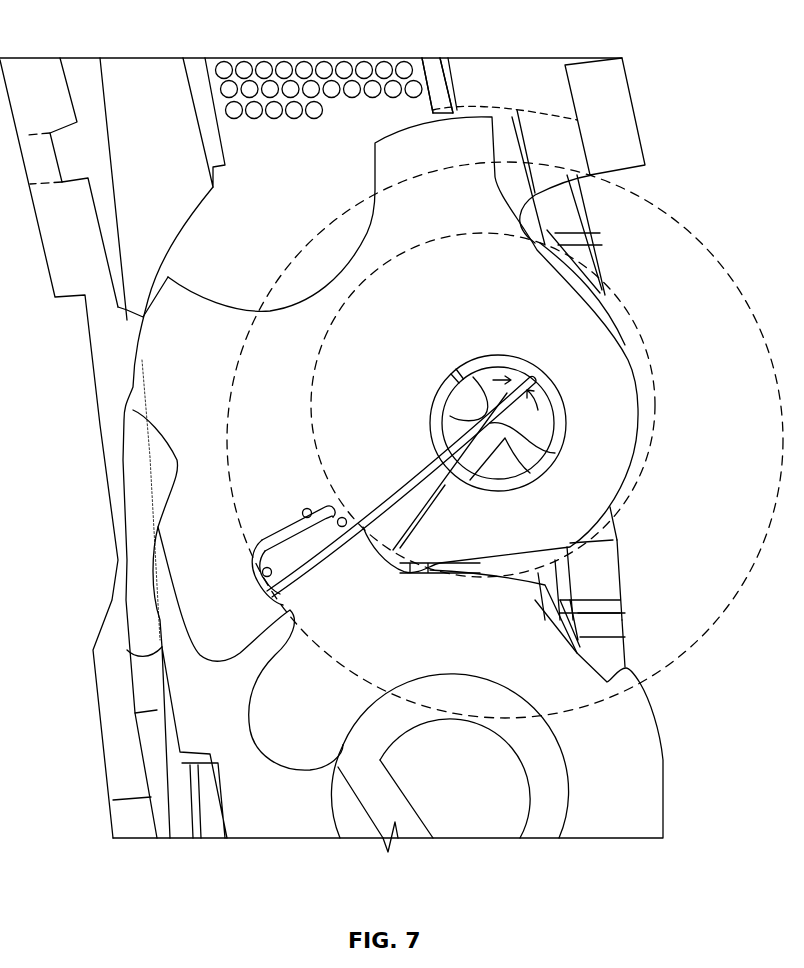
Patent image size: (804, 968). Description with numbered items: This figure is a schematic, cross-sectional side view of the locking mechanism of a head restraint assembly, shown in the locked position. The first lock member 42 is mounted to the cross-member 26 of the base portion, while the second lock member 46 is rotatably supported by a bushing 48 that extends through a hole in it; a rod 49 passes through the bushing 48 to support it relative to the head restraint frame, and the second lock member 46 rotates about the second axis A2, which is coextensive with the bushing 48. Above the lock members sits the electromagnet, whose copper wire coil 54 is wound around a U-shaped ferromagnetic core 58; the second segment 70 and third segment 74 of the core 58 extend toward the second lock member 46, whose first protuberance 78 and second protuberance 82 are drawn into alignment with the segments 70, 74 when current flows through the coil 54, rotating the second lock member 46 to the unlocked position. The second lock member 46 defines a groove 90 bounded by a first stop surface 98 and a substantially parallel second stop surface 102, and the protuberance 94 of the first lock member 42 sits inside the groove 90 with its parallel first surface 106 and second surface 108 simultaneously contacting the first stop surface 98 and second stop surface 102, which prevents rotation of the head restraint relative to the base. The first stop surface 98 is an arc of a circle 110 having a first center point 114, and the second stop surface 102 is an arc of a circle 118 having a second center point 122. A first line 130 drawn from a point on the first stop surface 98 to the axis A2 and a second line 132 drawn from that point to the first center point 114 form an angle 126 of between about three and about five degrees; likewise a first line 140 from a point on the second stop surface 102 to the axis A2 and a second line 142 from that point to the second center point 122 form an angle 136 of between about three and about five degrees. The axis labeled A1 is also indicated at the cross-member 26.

The ferromagnetic core 58 is at (82, 73).
The copper wire coil 54 is at (328, 55).
The first line 140 is at (437, 72).
The third segment 74 is at (540, 72).
The second protuberance 82 is at (420, 155).
The second segment 70 is at (118, 193).
The circle 110 is at (708, 247).
The circle 118 is at (645, 322).
The second line 142 is at (473, 377).
The angle 136 is at (528, 378).
The second center point 122 is at (452, 395).
The rod 49 is at (545, 415).
The bushing 48 is at (560, 430).
The first line 130 is at (432, 467).
The angle 126 is at (409, 478).
The second axis A2 is at (545, 447).
The groove 90 is at (307, 509).
The second stop surface 102 is at (342, 517).
The second surface 108 is at (354, 556).
The second line 132 is at (485, 472).
The first center point 114 is at (528, 478).
The protuberance 94 is at (263, 562).
The first stop surface 98 is at (263, 574).
The first surface 106 is at (270, 590).
The first protuberance 78 is at (167, 360).
The second lock member 46 is at (167, 525).
The first lock member 42 is at (650, 757).
The cross-member 26 is at (550, 795).
The first axis A1 is at (447, 797).